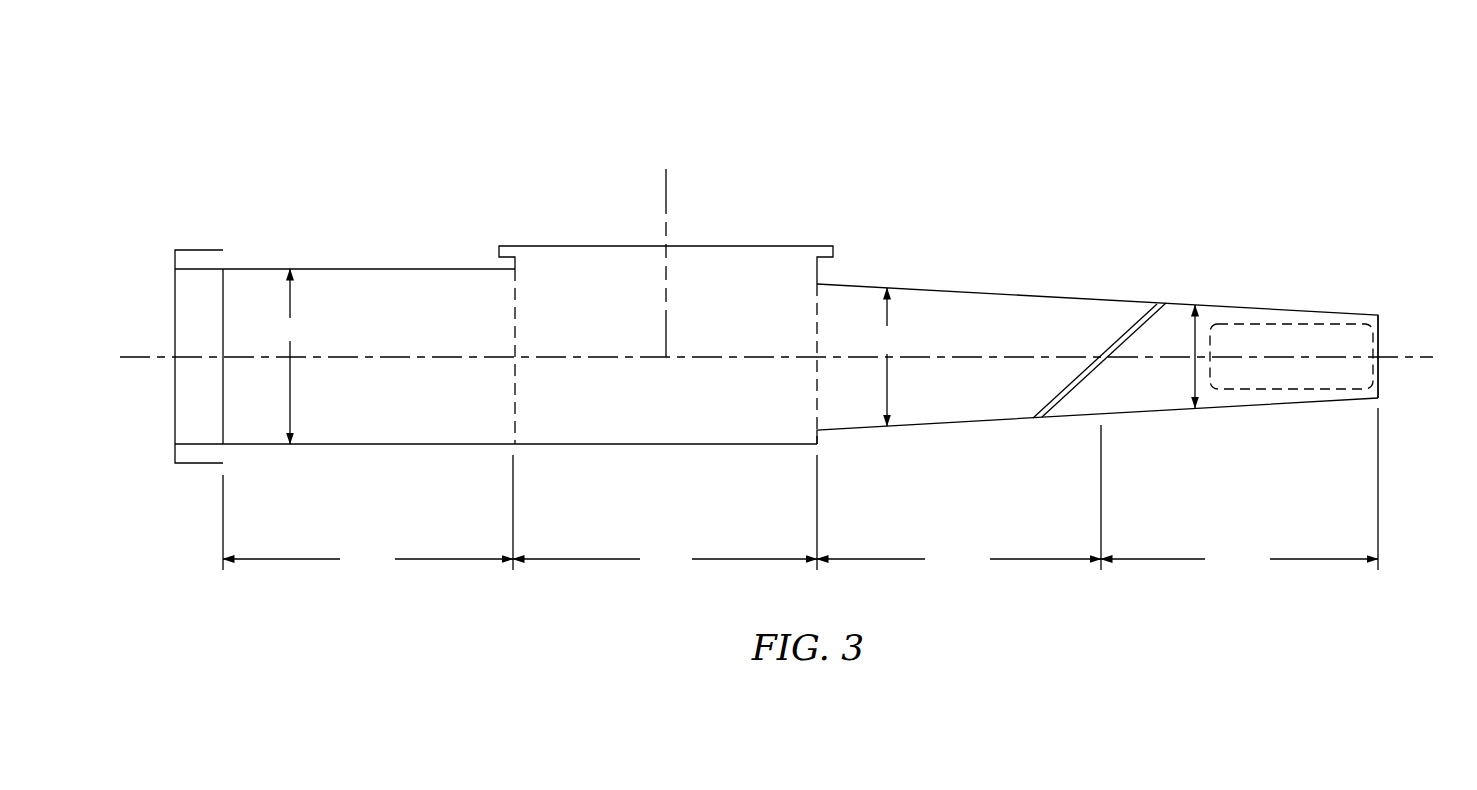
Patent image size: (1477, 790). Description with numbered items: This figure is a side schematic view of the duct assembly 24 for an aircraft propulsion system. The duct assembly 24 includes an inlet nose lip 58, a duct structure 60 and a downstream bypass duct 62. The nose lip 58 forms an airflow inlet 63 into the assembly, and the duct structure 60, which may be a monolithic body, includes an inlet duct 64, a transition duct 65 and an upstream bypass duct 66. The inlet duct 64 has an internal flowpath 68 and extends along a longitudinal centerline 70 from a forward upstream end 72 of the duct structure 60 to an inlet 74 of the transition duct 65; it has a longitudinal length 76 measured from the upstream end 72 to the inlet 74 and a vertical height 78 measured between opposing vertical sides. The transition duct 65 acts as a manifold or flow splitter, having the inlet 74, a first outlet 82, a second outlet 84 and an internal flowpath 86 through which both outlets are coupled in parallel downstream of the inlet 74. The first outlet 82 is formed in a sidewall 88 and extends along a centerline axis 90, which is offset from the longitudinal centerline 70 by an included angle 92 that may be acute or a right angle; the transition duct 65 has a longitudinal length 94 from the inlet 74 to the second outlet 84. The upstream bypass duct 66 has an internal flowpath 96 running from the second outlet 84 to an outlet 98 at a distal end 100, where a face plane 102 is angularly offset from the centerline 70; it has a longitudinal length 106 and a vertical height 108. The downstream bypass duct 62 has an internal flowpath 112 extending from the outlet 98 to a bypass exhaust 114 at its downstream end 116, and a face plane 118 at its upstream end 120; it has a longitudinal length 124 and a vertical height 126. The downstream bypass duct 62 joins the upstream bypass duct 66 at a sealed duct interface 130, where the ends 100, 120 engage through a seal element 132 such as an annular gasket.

The duct assembly 24 is at (1071, 157).
The inlet nose lip 58 is at (203, 231).
The duct structure 60 is at (403, 231).
The downstream bypass duct 62 is at (1312, 271).
The airflow inlet 63 is at (175, 307).
The inlet duct 64 is at (361, 456).
The transition duct 65 is at (661, 451).
The upstream bypass duct 66 is at (922, 431).
The internal flowpath 68 is at (331, 416).
The longitudinal centerline 70 is at (125, 360).
The upstream end 72 is at (222, 418).
The inlet 74 is at (513, 425).
The longitudinal length 76 is at (368, 513).
The vertical height 78 is at (290, 356).
The first outlet 82 is at (568, 246).
The second outlet 84 is at (818, 428).
The internal flowpath 86 is at (652, 404).
The sidewall 88 is at (460, 269).
The centerline axis 90 is at (666, 175).
The included angle 92 is at (663, 311).
The longitudinal length 94 is at (665, 513).
The internal flowpath 96 is at (944, 338).
The outlet 98 is at (1028, 440).
The distal end 100 is at (1028, 440).
The face plane 102 is at (1068, 396).
The longitudinal length 106 is at (959, 498).
The vertical height 108 is at (887, 357).
The internal flowpath 112 is at (1130, 394).
The bypass exhaust 114 is at (1258, 400).
The downstream end 116 is at (1380, 383).
The face plane 118 is at (1099, 331).
The upstream end 120 is at (1122, 333).
The longitudinal length 124 is at (1239, 490).
The vertical height 126 is at (1195, 340).
The duct interface 130 is at (1163, 297).
The seal element 132 is at (1119, 345).